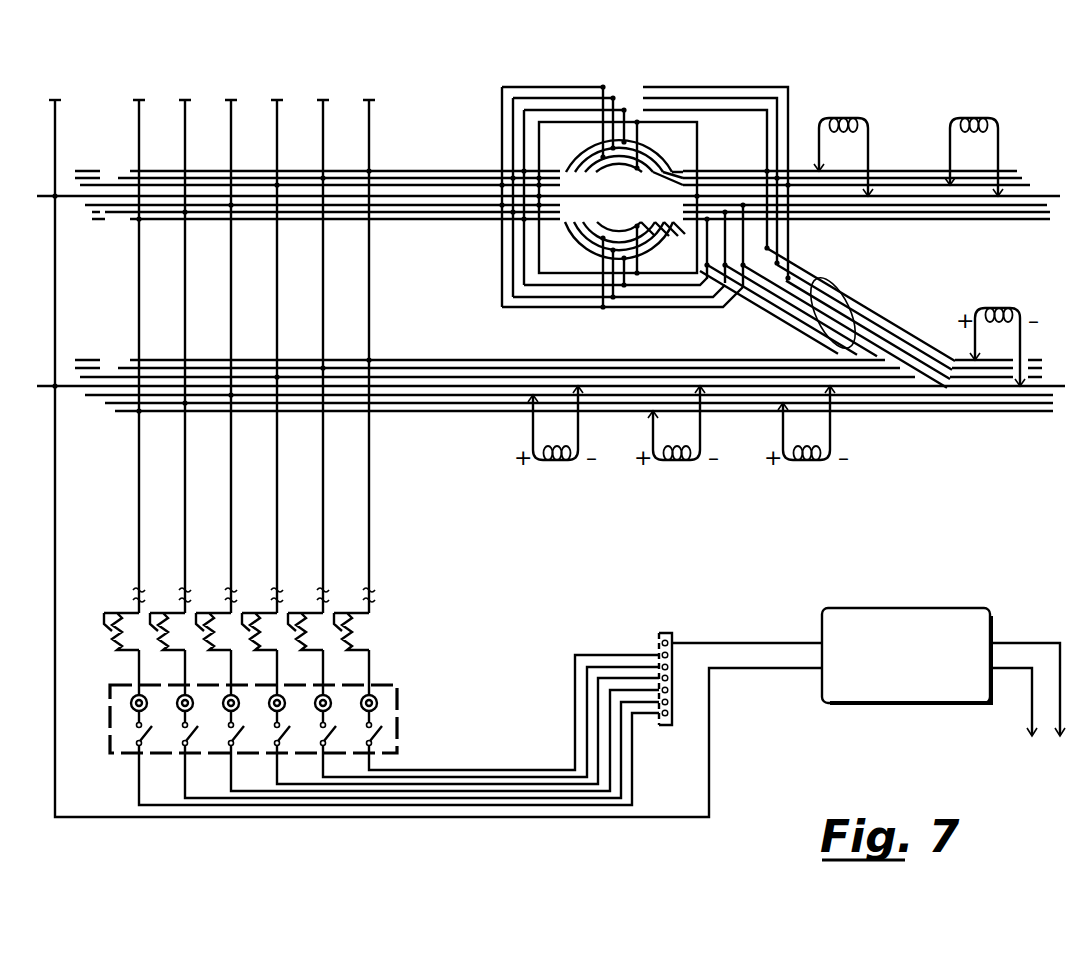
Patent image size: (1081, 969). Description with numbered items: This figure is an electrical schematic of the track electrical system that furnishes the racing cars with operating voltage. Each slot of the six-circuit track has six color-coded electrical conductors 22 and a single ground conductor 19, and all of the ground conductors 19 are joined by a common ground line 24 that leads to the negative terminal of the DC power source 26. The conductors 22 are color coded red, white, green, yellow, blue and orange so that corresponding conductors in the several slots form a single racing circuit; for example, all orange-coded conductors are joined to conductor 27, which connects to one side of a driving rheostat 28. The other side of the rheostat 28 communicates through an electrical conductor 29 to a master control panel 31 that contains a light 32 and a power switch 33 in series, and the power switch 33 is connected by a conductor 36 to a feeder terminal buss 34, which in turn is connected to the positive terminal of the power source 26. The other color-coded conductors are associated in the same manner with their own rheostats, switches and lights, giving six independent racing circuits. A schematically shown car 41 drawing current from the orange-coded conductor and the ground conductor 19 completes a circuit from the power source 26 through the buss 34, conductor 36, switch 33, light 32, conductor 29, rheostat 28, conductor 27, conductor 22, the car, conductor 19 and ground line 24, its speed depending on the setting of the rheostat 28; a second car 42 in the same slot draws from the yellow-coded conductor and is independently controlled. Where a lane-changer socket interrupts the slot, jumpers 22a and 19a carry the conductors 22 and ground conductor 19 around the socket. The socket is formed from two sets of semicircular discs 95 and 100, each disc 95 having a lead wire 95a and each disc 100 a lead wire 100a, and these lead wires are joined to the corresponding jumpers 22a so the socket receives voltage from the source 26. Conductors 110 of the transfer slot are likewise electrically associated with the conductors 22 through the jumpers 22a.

The ground conductor 19 is at (40, 192).
The electrical conductor 22 is at (128, 170).
The common ground line 24 is at (62, 291).
The DC power source 26 is at (908, 606).
The conductor 27 is at (374, 292).
The driving rheostat 28 is at (362, 634).
The electrical conductor 29 is at (374, 668).
The master control panel 31 is at (114, 762).
The light 32 is at (380, 704).
The power switch 33 is at (383, 732).
The feeder terminal buss 34 is at (656, 630).
The conductor 36 is at (573, 663).
The car 41 is at (829, 118).
The car 42 is at (960, 118).
The jumper 19a is at (700, 150).
The jumper 22a is at (668, 88).
The semicircular disc 95 is at (596, 175).
The lead wire 95a is at (630, 110).
The semicircular disc 100 is at (586, 221).
The lead wire 100a is at (612, 300).
The conductor 110 is at (843, 280).